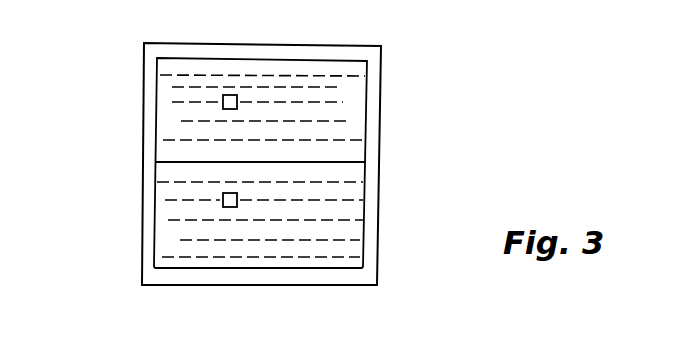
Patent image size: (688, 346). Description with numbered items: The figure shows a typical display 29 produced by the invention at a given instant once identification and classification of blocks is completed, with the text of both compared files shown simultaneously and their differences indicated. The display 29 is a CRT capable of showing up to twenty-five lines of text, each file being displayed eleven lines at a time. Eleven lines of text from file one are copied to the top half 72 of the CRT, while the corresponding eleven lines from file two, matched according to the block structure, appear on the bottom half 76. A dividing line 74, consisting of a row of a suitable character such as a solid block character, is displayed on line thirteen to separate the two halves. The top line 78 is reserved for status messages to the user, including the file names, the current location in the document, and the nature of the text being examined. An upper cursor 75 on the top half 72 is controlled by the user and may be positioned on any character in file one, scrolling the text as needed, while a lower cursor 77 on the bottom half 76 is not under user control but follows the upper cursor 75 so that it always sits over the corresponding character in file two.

The display 29 is at (177, 285).
The top half 72 is at (162, 107).
The dividing line 74 is at (357, 160).
The upper cursor 75 is at (223, 100).
The bottom half 76 is at (173, 224).
The lower cursor 77 is at (223, 200).
The top line 78 is at (366, 69).